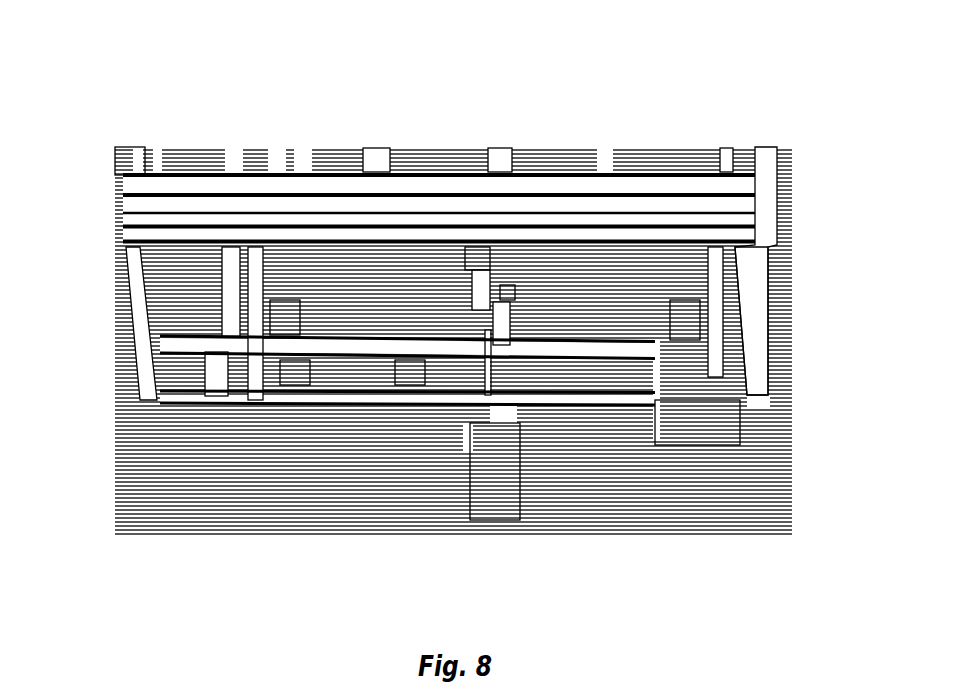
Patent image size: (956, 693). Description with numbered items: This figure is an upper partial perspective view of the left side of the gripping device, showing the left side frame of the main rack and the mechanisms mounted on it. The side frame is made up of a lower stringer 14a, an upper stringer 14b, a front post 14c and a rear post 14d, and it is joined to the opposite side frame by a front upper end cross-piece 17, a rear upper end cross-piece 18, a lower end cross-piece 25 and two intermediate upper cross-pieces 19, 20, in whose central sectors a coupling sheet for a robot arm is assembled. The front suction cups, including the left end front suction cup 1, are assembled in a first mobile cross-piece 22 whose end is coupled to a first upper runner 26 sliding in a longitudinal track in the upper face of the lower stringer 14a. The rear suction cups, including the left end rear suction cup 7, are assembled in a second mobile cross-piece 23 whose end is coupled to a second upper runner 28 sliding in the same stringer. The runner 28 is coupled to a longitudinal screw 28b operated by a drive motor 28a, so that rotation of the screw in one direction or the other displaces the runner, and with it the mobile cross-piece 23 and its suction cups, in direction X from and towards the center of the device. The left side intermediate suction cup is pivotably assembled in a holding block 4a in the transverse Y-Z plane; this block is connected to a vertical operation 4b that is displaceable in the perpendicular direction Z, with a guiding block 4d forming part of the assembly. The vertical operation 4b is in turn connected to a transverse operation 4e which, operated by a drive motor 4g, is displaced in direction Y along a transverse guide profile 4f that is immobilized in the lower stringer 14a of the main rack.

The rear upper end cross-piece 18 is at (103, 127).
The upper stringer 14b is at (437, 130).
The lower stringer 14a is at (407, 216).
The intermediate upper cross-piece 20 is at (364, 114).
The intermediate upper cross-piece 19 is at (501, 114).
The front upper end cross-piece 17 is at (769, 219).
The lower end cross-piece 25 is at (131, 284).
The second mobile cross-piece 23 is at (151, 323).
The vertical operation 4b is at (437, 265).
The holding block 4a is at (442, 293).
The guiding block 4d is at (535, 290).
The transverse guide profile 4f is at (551, 323).
The first mobile cross-piece 22 is at (777, 303).
The front post 14c is at (791, 321).
The left end front suction cup 1 is at (759, 352).
The rear post 14d is at (92, 335).
The drive motor 28a is at (136, 410).
The left end rear suction cup 7 is at (186, 422).
The second upper runner 28 is at (224, 476).
The longitudinal screw 28b is at (362, 476).
The drive motor 4g is at (475, 505).
The transverse operation 4e is at (572, 460).
The first upper runner 26 is at (729, 491).